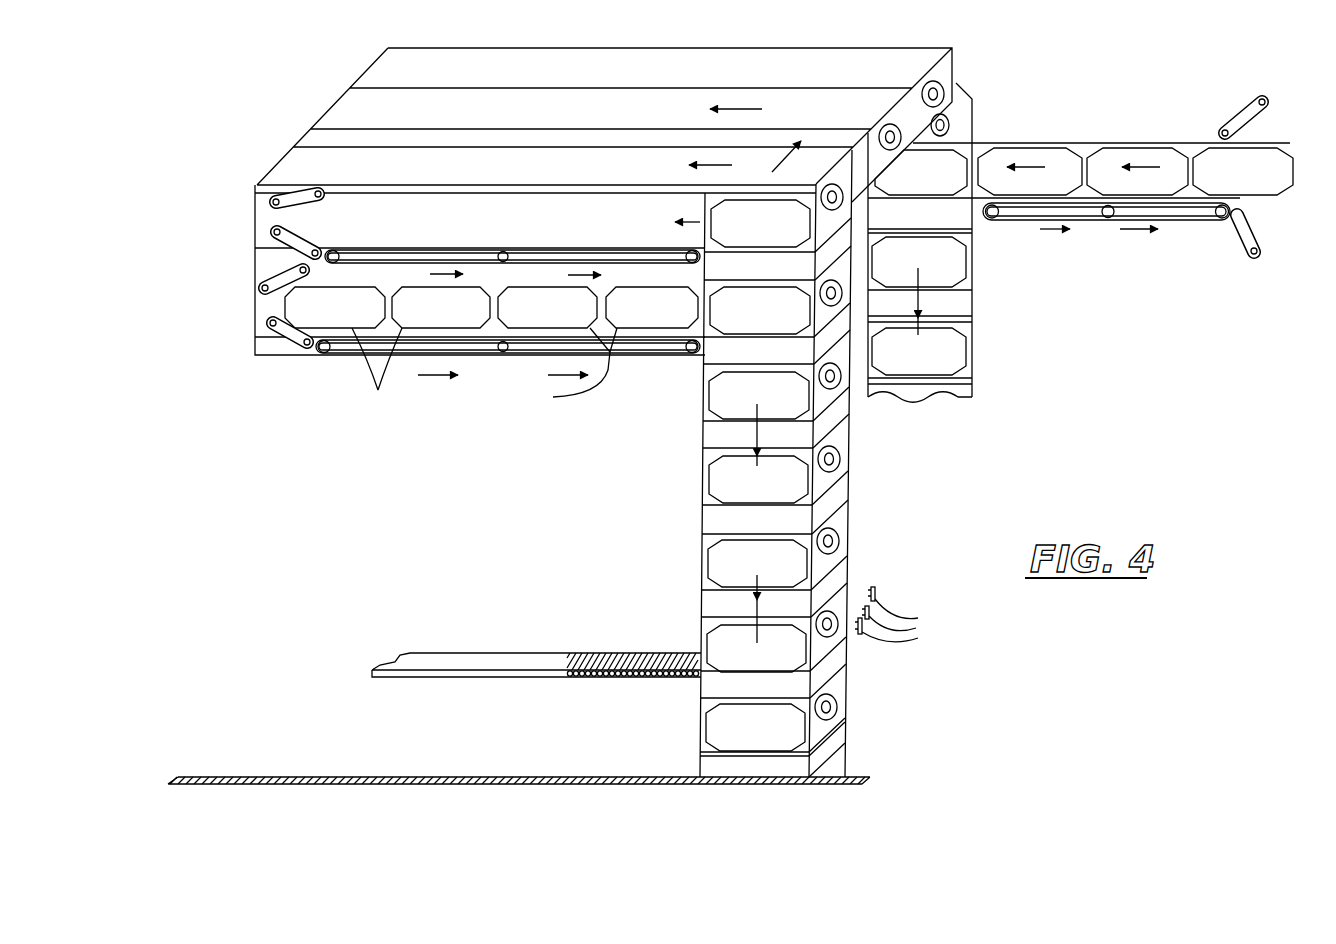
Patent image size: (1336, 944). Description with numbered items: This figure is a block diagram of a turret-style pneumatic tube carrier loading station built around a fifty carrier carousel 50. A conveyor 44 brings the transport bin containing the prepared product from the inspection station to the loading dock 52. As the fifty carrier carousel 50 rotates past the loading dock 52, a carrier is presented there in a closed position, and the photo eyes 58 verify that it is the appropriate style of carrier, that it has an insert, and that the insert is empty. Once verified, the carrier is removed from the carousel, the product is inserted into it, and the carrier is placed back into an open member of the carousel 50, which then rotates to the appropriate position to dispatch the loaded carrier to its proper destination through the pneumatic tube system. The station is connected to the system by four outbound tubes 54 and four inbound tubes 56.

The conveyor 44 is at (519, 684).
The fifty carrier carousel 50 is at (880, 70).
The loading dock 52 is at (595, 647).
The outbound tubes 54 is at (360, 160).
The inbound tubes 56 is at (1124, 138).
The photo eyes 58 is at (911, 599).